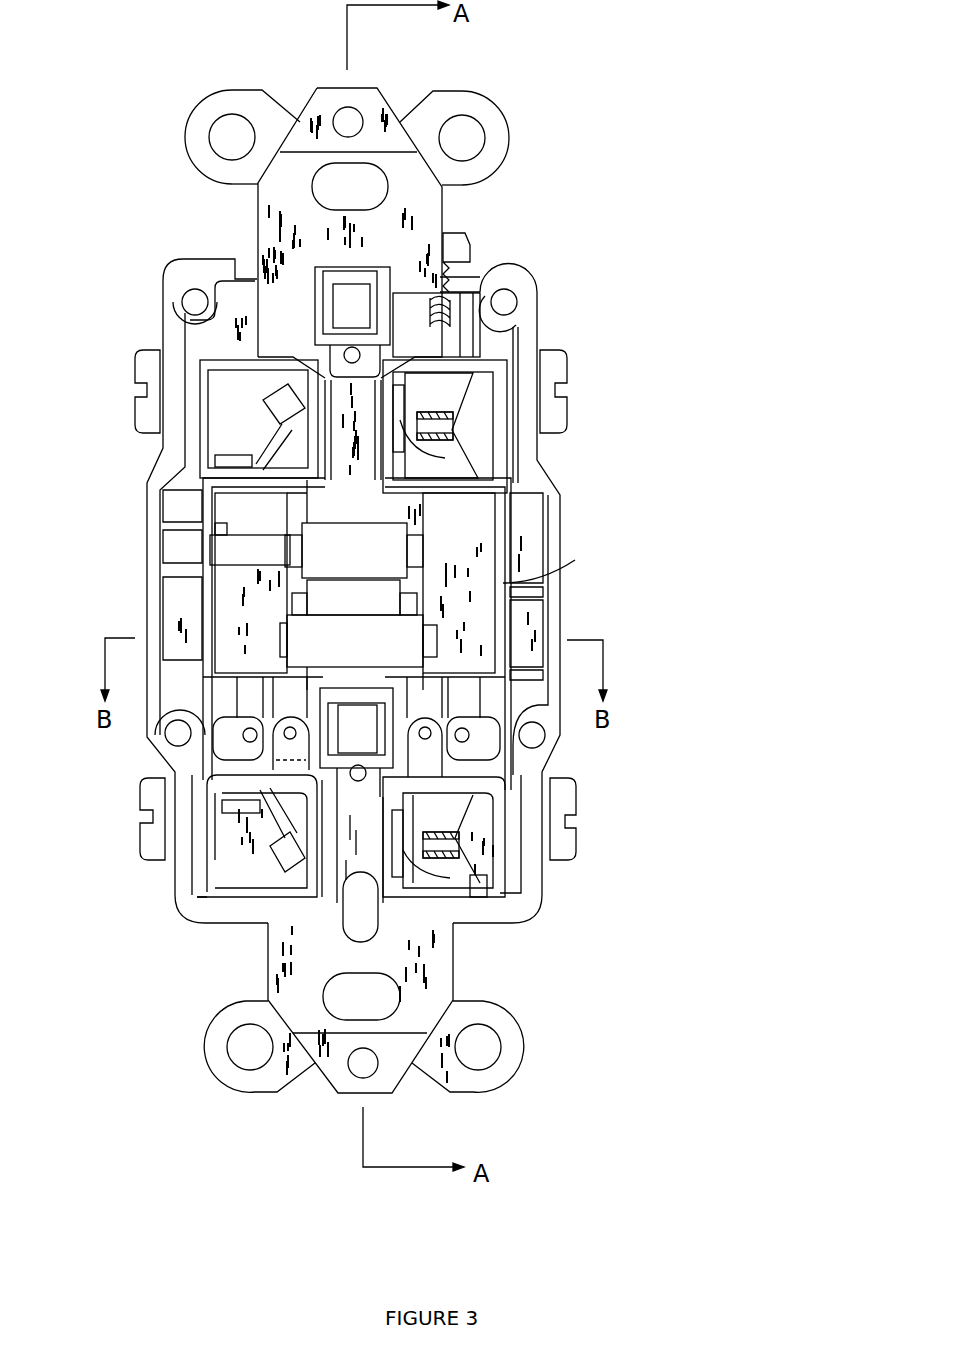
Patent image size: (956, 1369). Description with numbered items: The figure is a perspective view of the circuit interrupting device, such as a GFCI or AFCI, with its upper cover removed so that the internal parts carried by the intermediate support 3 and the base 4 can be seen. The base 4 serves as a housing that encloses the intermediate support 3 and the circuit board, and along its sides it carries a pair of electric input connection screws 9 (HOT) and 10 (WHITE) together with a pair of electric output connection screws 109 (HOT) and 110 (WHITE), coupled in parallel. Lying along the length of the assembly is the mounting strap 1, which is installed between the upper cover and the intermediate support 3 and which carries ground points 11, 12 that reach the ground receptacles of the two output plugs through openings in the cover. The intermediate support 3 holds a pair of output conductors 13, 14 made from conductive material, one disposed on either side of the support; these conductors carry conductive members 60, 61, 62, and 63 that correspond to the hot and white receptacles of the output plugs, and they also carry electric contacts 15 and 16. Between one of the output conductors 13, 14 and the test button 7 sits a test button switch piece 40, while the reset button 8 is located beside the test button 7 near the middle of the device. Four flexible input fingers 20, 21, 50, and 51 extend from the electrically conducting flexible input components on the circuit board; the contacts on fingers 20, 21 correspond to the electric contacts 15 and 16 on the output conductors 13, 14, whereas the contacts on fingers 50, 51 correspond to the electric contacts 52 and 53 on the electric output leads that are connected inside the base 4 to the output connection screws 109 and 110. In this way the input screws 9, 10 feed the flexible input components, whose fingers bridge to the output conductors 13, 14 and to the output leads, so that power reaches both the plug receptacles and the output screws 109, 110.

The mounting strap 1 is at (498, 135).
The intermediate support 3 is at (175, 290).
The base 4 is at (153, 568).
The test button 7 is at (365, 526).
The reset button 8 is at (352, 615).
The electric input connection screw (HOT) 9 is at (150, 410).
The electric input connection screw (WHITE) 10 is at (560, 407).
The ground point 11 is at (316, 323).
The ground point 12 is at (336, 715).
The output conductor 13 is at (553, 564).
The output conductor 14 is at (205, 588).
The electric contact 15 is at (469, 735).
The electric contact 16 is at (238, 738).
The flexible input finger 20 is at (476, 703).
The flexible input finger 21 is at (262, 703).
The test button switch piece 40 is at (265, 562).
The flexible input finger 50 is at (436, 703).
The flexible input finger 51 is at (304, 703).
The electric contact 52 is at (425, 747).
The electric contact 53 is at (291, 743).
The conductive member 60 is at (302, 397).
The conductive member 61 is at (307, 870).
The conductive member 62 is at (403, 432).
The conductive member 63 is at (420, 857).
The electric output connection screw (HOT) 109 is at (150, 848).
The electric output connection screw (WHITE) 110 is at (566, 833).